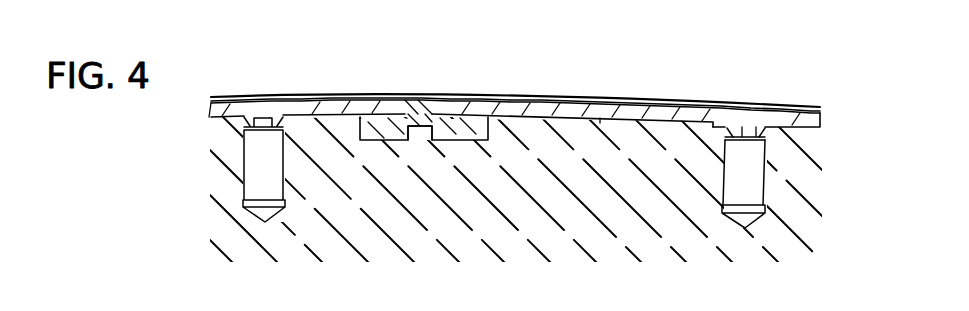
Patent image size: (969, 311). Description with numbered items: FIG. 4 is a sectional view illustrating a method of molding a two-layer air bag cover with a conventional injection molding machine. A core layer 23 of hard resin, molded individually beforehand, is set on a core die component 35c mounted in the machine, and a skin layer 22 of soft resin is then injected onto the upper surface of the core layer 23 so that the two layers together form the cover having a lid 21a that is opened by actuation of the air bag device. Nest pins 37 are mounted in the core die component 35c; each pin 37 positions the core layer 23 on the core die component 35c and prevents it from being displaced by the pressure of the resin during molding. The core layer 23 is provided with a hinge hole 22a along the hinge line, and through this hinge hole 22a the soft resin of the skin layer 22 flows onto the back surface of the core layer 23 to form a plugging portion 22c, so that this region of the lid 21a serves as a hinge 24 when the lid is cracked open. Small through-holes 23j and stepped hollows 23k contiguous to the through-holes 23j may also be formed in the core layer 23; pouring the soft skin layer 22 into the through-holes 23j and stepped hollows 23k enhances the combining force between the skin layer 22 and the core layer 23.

The lid 21a is at (553, 88).
The skin layer 22 is at (660, 92).
The hinge hole 22a is at (430, 97).
The plugging portion 22c is at (367, 143).
The core layer 23 is at (690, 128).
The through-hole 23j is at (617, 92).
The stepped hollow 23k is at (605, 123).
The hinge 24 is at (425, 145).
The core die component 35c is at (545, 205).
The nest pin 37 is at (255, 197).